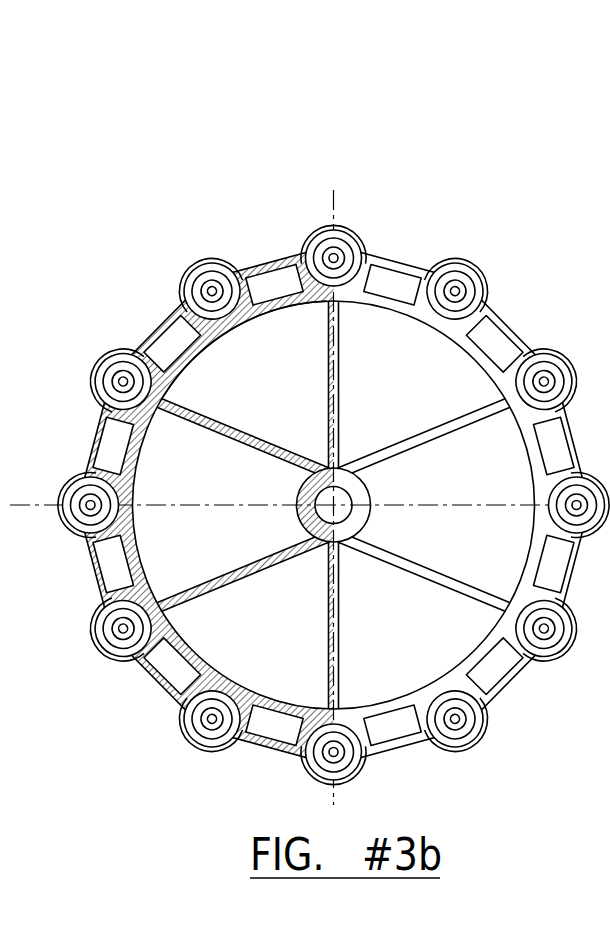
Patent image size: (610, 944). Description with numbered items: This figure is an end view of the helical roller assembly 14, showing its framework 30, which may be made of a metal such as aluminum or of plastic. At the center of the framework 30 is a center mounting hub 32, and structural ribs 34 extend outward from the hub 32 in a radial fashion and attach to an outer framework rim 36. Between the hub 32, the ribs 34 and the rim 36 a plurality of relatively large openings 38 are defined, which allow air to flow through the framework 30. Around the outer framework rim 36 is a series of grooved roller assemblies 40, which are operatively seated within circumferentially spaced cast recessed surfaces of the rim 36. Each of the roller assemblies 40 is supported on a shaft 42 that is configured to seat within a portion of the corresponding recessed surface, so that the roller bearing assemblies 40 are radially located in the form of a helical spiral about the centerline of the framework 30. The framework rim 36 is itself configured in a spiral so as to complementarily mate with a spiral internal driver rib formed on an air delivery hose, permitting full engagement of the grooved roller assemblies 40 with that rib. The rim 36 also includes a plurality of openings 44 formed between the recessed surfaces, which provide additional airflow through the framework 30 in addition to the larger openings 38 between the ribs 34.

The helical roller assembly 14 is at (366, 112).
The framework 30 is at (401, 256).
The center mounting hub 32 is at (370, 498).
The structural ribs 34 is at (340, 363).
The outer framework rim 36 is at (530, 553).
The openings 38 is at (275, 363).
The grooved roller assemblies 40 is at (472, 241).
The shafts 42 is at (458, 291).
The openings 44 is at (179, 341).